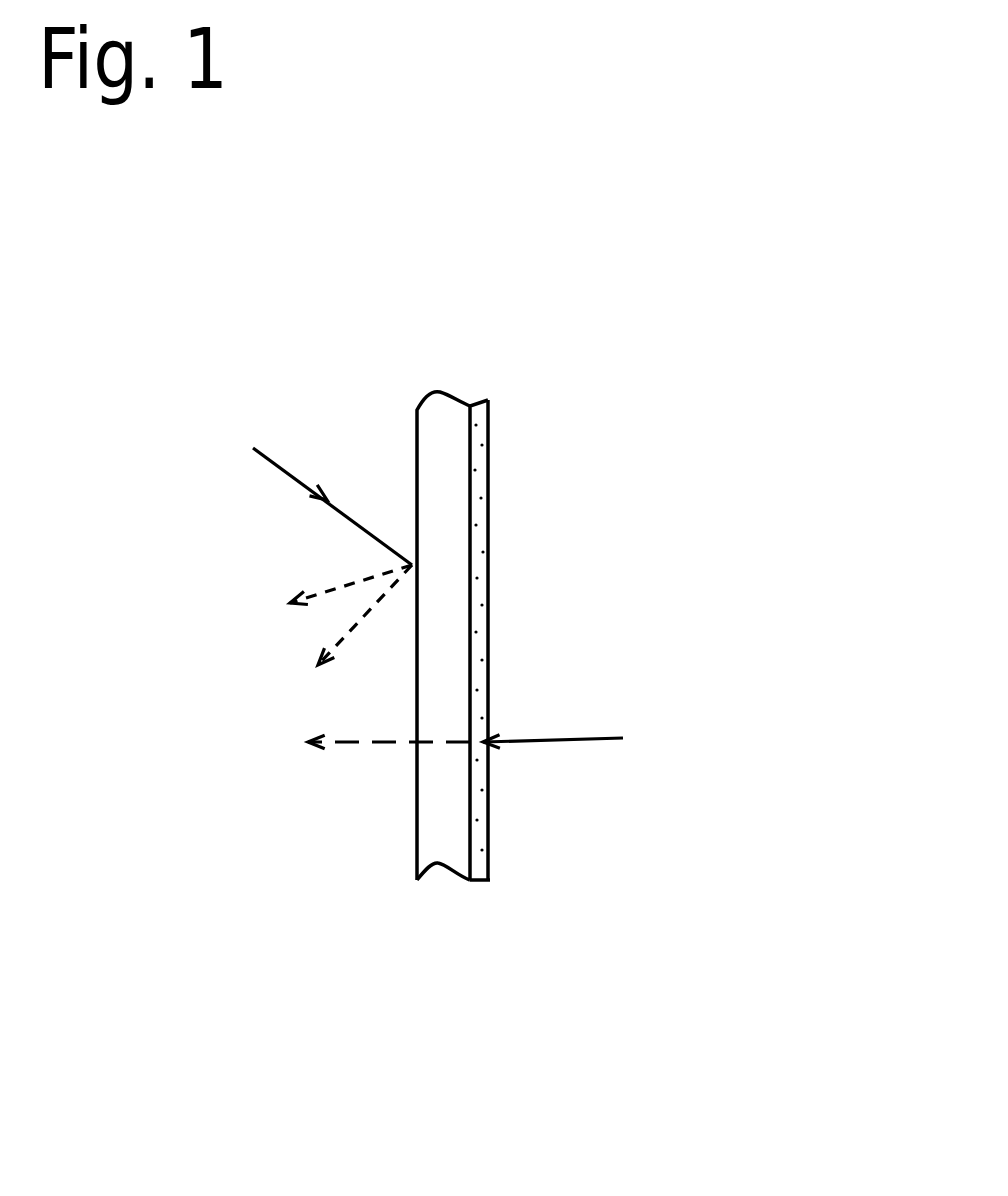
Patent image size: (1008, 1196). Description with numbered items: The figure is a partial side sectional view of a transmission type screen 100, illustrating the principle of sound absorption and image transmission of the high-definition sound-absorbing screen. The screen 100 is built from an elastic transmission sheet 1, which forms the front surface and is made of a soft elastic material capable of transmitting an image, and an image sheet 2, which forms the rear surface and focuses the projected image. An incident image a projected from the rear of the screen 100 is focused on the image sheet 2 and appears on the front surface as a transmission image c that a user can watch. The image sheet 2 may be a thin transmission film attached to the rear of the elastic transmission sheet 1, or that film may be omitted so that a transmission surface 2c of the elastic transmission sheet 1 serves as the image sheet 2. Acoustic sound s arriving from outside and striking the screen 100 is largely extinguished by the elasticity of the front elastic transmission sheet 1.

The elastic transmission sheet 1 is at (440, 392).
The image sheet 2 is at (478, 578).
The transmission surface 2c is at (677, 640).
The transmission type screen 100 is at (638, 645).
The acoustic sound s is at (308, 522).
The transmission image c is at (353, 743).
The incident image a is at (601, 731).